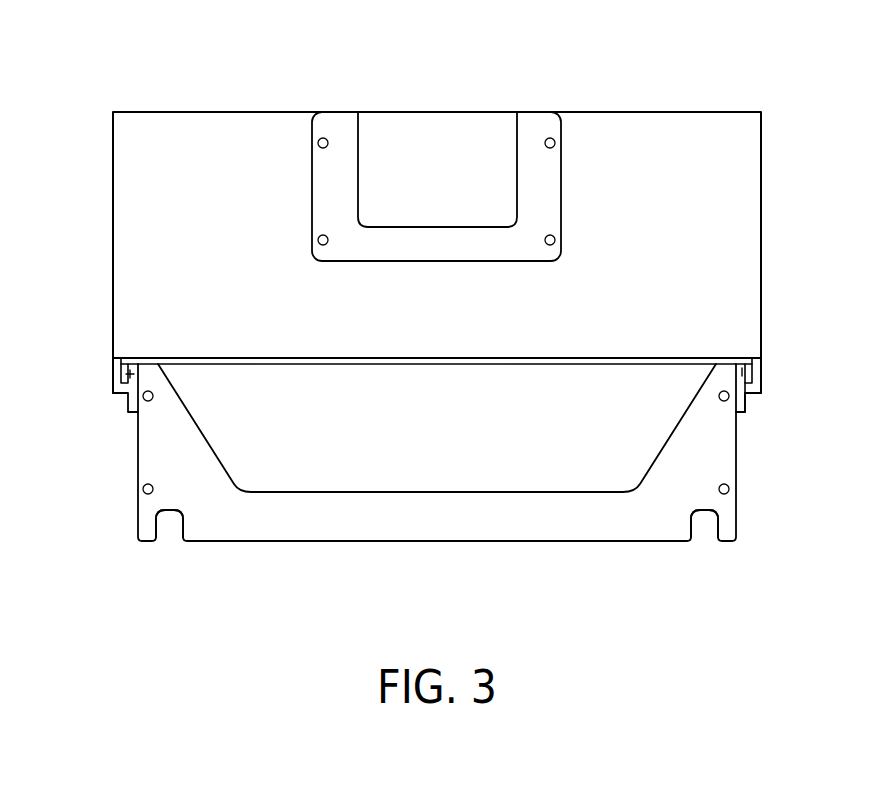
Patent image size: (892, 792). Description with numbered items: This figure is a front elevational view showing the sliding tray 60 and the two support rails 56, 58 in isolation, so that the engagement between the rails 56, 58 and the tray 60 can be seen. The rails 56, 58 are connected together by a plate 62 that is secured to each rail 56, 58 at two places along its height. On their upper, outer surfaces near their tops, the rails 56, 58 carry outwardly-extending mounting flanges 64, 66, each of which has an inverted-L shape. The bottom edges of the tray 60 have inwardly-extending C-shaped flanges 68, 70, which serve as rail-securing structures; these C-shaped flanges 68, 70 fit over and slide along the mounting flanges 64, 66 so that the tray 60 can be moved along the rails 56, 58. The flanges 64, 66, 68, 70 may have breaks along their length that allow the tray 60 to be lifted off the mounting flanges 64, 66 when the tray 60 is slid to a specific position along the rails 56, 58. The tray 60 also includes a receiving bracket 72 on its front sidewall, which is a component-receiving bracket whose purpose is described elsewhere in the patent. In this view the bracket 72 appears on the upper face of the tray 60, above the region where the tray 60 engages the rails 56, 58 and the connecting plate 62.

The rail 56 is at (148, 530).
The rail 58 is at (725, 533).
The tray 60 is at (620, 105).
The plate 62 is at (329, 515).
The mounting flange 64 is at (122, 377).
The mounting flange 66 is at (745, 400).
The C-shaped flange 68 is at (119, 373).
The C-shaped flange 70 is at (755, 378).
The receiving bracket 72 is at (338, 128).